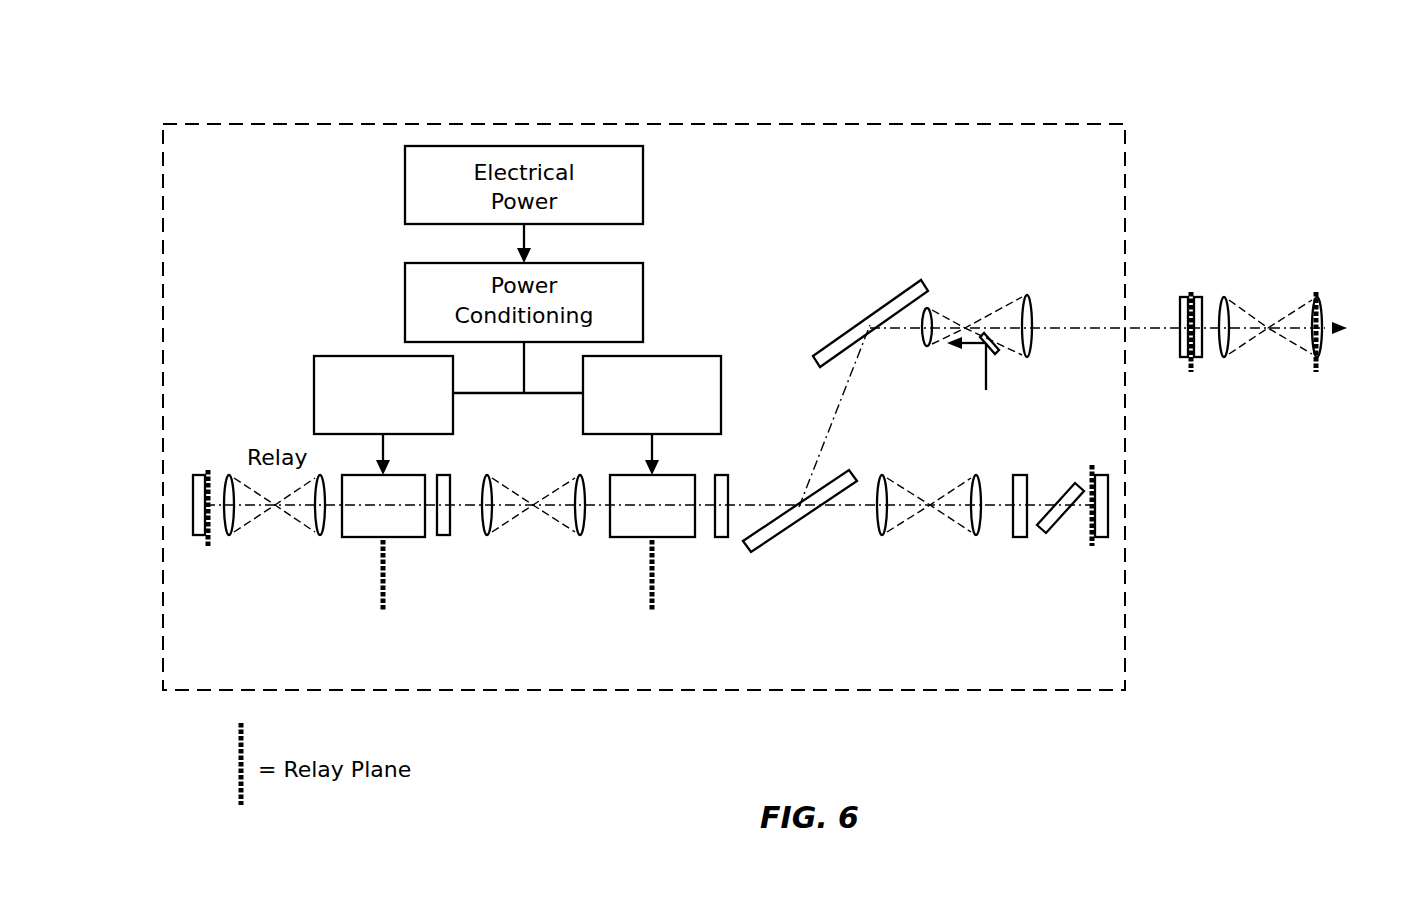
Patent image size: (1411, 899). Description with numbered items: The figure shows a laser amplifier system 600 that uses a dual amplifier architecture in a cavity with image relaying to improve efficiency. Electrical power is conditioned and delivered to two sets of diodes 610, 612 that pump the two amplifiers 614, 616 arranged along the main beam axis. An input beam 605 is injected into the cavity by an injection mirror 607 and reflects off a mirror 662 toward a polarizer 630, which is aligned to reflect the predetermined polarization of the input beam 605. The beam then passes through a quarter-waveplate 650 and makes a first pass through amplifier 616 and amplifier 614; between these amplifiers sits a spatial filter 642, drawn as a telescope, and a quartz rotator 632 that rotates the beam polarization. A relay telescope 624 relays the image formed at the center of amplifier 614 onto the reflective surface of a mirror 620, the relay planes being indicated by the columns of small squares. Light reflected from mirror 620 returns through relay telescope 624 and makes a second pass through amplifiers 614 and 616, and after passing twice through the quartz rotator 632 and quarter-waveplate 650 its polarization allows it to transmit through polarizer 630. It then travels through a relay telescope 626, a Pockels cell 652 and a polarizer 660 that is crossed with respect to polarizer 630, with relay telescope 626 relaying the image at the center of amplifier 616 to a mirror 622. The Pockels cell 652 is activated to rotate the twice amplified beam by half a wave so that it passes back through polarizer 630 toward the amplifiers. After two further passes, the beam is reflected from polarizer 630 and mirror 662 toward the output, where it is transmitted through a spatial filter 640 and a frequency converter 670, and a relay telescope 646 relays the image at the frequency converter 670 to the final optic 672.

The laser amplifier system 600 is at (360, 90).
The diodes 610 is at (320, 356).
The diodes 612 is at (680, 356).
The amplifier 614 is at (353, 538).
The amplifier 616 is at (621, 538).
The mirror 620 is at (195, 533).
The mirror 622 is at (1108, 475).
The relay telescope 624 is at (273, 547).
The relay telescope 626 is at (934, 561).
The polarizer 630 is at (760, 546).
The quartz rotator 632 is at (442, 537).
The spatial filter 640 is at (973, 278).
The spatial filter 642 is at (530, 557).
The relay telescope 646 is at (1265, 371).
The quarter-waveplate 650 is at (718, 537).
The Pockels cell 652 is at (1015, 537).
The polarizer 660 is at (1060, 520).
The mirror 662 is at (840, 338).
The frequency converter 670 is at (1180, 296).
The final optic 672 is at (1312, 297).
The input beam 605 is at (968, 386).
The injection mirror 607 is at (995, 354).